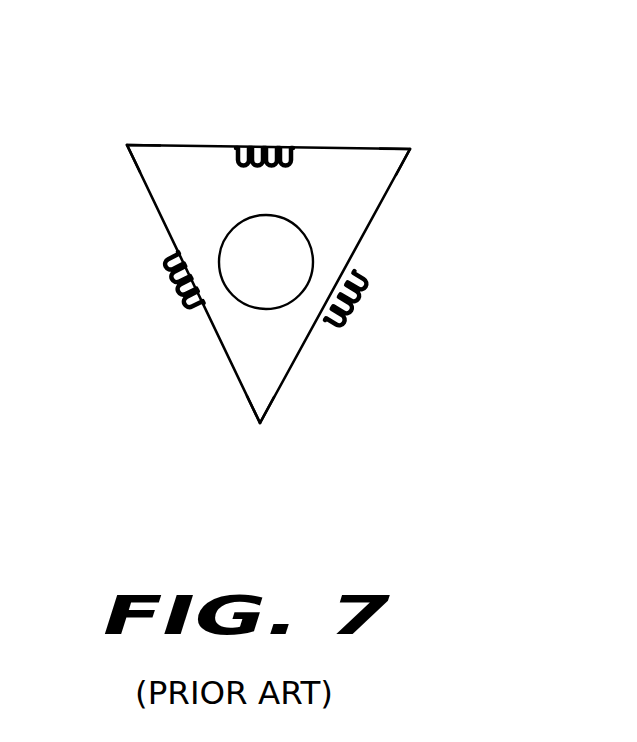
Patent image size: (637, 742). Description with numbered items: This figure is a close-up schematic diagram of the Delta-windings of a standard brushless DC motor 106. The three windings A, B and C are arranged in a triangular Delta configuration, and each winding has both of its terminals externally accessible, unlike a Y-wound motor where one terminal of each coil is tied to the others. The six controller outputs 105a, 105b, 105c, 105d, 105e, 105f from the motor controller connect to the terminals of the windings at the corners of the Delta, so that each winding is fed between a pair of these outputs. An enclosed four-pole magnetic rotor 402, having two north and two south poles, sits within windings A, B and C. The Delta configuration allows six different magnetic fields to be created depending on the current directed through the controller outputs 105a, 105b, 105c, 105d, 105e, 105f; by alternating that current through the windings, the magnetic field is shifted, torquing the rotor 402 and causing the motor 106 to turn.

The motor 106 is at (498, 72).
The magnetic rotor 402 is at (303, 233).
The controller output 105a is at (129, 158).
The controller output 105b is at (247, 398).
The controller output 105c is at (279, 400).
The controller output 105d is at (407, 160).
The controller output 105e is at (399, 147).
The controller output 105f is at (141, 143).